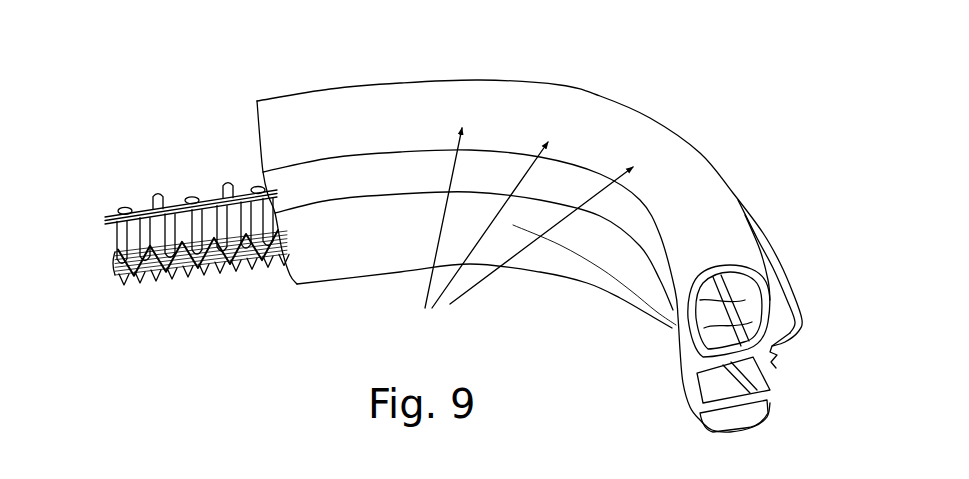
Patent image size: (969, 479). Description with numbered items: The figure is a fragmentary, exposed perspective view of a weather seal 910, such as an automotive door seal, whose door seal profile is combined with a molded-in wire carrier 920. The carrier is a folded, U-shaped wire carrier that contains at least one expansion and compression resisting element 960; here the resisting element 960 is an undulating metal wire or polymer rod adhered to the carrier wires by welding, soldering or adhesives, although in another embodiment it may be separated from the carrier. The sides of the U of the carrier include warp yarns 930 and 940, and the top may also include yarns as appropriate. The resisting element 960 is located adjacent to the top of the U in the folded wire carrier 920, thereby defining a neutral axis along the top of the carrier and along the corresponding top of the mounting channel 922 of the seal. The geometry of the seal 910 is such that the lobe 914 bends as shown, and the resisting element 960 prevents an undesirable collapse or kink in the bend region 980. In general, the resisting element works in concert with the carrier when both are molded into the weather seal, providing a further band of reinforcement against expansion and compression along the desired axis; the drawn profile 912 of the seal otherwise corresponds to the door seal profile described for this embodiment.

The weather seal 910 is at (481, 77).
The clip profile 912 is at (729, 311).
The lobe 914 is at (782, 285).
The molded-in wire carrier 920 is at (227, 273).
The mounting channel 922 is at (771, 367).
The warp yarn 930 is at (168, 202).
The warp yarn 940 is at (123, 280).
The expansion and compression resisting element 960 is at (118, 260).
The bend region 980 is at (520, 230).